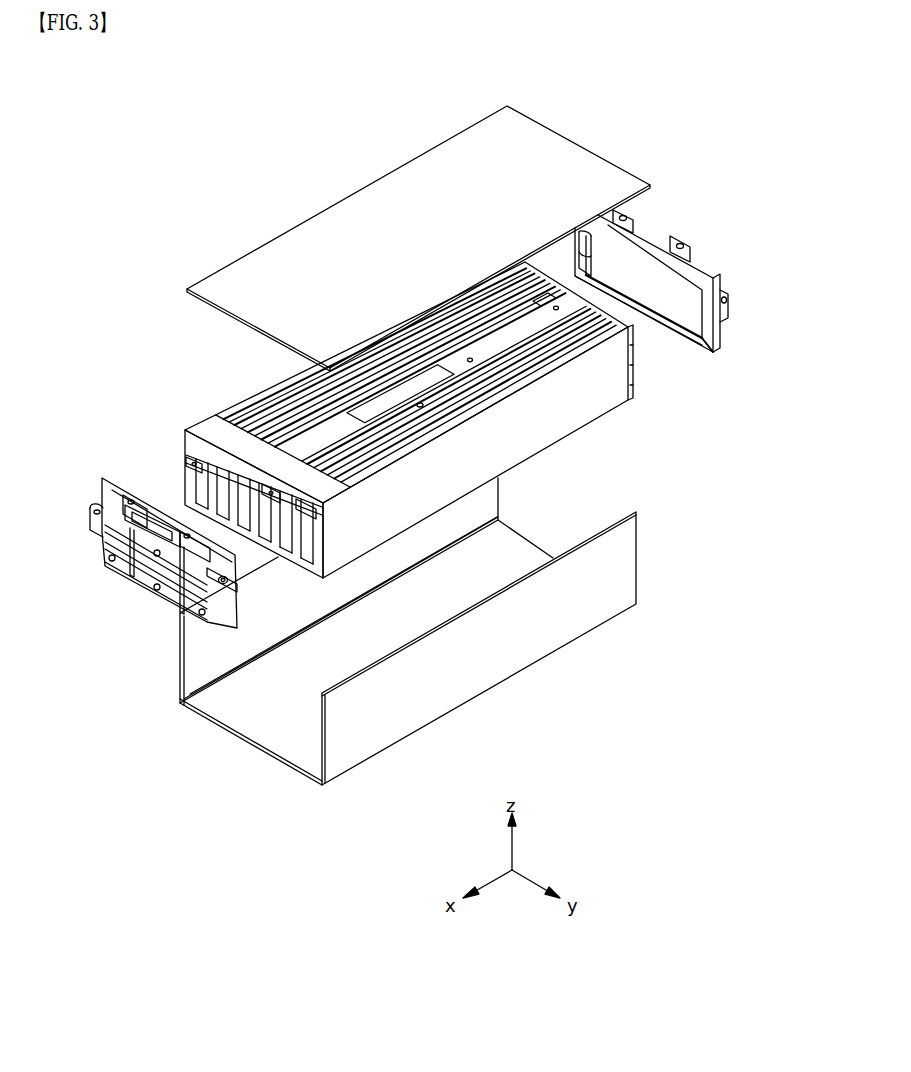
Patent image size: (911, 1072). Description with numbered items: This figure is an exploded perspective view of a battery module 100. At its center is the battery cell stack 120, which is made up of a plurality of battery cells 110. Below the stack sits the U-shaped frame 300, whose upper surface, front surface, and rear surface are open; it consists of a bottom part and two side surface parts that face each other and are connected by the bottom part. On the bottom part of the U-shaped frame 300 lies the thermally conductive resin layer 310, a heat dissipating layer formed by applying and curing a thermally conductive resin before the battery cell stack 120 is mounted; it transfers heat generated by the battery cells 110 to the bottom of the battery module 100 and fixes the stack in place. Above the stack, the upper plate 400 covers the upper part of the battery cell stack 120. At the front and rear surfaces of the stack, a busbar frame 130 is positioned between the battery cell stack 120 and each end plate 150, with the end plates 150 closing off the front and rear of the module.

The battery module 100 is at (126, 120).
The battery cell 110 is at (411, 420).
The battery cell stack 120 is at (240, 414).
The busbar frame 130 is at (176, 462).
The end plate 150 is at (662, 250).
The U-shaped frame 300 is at (400, 632).
The thermally conductive resin layer 310 is at (288, 705).
The upper plate 400 is at (356, 222).